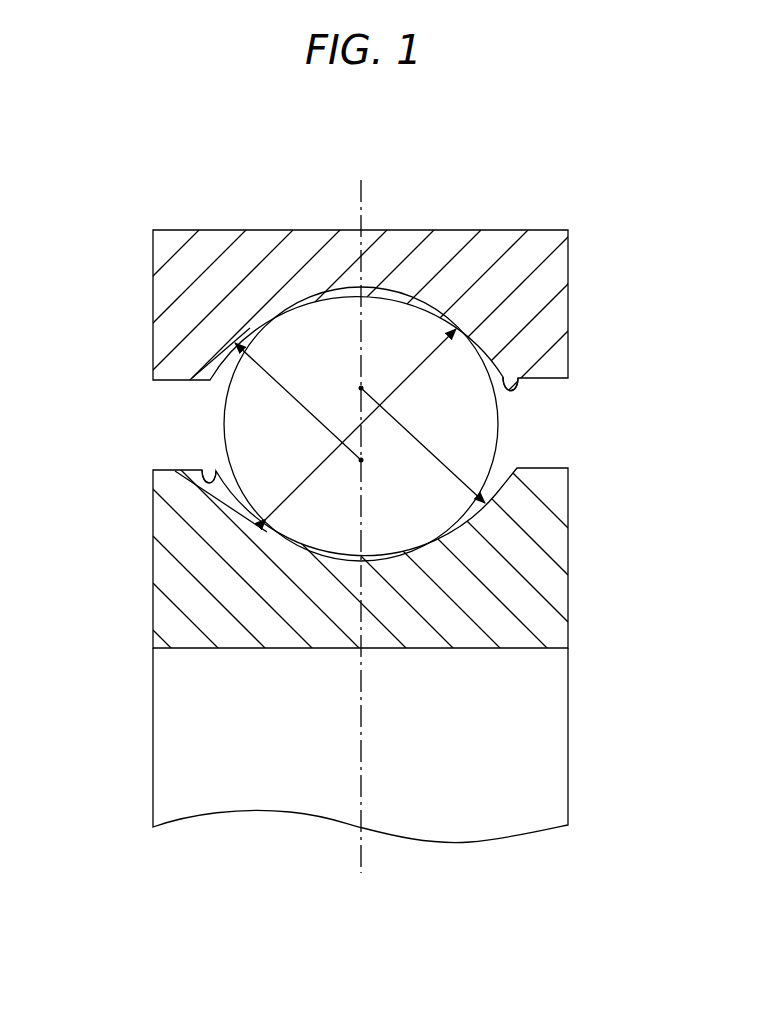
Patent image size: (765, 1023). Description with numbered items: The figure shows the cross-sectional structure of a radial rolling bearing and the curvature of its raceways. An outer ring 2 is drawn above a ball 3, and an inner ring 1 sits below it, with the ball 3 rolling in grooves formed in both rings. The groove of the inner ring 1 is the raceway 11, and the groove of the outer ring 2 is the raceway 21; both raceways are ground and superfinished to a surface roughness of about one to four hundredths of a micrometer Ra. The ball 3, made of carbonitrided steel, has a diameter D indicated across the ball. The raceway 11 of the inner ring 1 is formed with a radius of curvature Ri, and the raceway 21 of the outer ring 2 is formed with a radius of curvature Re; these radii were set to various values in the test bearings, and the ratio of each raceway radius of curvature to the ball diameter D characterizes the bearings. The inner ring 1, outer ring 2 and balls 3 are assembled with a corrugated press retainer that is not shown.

The inner ring 1 is at (538, 563).
The outer ring 2 is at (552, 283).
The ball 3 is at (476, 412).
The raceway of the inner ring 11 is at (209, 478).
The raceway of the outer ring 21 is at (512, 392).
The radius of curvature of the outer ring raceway Re is at (298, 402).
The radius of curvature of the inner ring raceway Ri is at (447, 465).
The diameter of the ball D is at (320, 465).